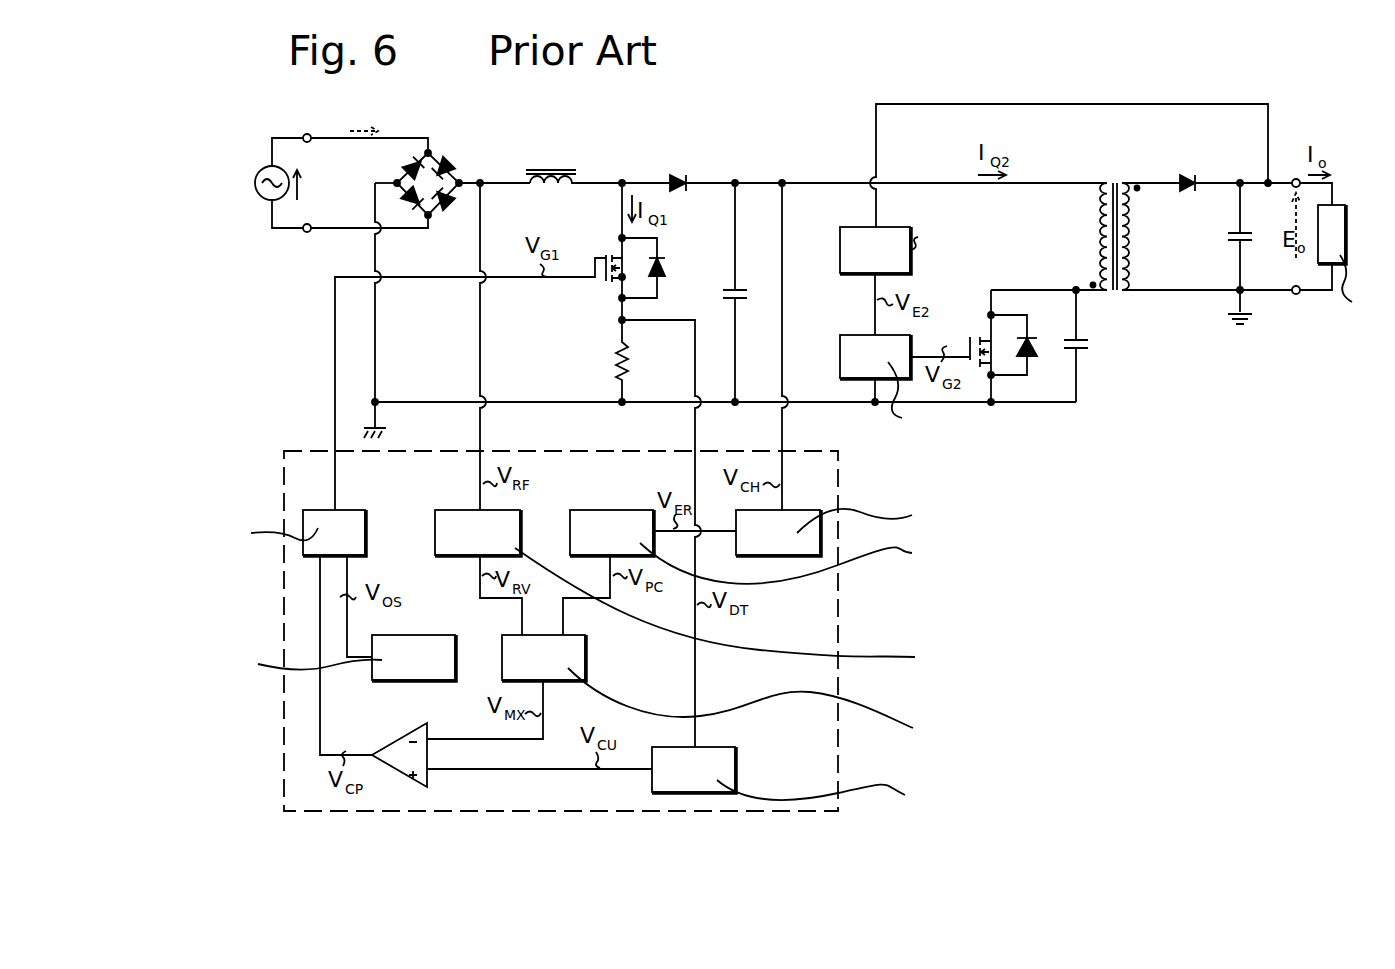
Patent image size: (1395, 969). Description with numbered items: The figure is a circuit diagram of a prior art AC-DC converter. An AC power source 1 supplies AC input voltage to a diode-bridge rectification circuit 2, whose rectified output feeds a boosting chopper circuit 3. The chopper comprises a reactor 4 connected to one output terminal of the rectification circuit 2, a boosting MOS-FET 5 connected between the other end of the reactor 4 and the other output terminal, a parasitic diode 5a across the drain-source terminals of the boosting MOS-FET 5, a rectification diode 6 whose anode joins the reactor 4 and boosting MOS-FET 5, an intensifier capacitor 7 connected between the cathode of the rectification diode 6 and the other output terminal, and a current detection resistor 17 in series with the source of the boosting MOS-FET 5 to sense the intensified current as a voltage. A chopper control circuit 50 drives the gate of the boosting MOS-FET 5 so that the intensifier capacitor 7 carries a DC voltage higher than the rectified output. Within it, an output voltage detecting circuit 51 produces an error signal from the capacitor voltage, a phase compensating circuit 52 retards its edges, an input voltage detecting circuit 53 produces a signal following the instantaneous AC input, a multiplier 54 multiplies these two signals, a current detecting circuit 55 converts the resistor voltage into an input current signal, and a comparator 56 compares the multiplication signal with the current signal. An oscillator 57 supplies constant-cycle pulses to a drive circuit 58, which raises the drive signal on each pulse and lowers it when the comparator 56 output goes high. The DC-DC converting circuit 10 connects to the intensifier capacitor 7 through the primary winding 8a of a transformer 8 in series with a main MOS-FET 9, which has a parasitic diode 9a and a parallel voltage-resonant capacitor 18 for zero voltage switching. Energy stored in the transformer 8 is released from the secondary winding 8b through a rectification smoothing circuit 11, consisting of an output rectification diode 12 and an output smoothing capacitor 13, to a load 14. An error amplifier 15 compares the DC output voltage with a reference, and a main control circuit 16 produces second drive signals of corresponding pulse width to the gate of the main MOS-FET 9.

The AC power source 1 is at (263, 168).
The rectification circuit 2 is at (452, 168).
The boosting chopper circuit 3 is at (627, 166).
The reactor 4 is at (550, 168).
The boosting MOS-FET 5 is at (606, 252).
The parasitic diode 5a is at (665, 264).
The rectification diode 6 is at (680, 175).
The intensifier capacitor 7 is at (742, 296).
The transformer 8 is at (1142, 199).
The primary winding 8a is at (1093, 266).
The secondary winding 8b is at (1136, 237).
The main MOS-FET 9 is at (975, 333).
The parasitic diode 9a is at (1030, 340).
The DC-DC converting circuit 10 is at (845, 139).
The rectification smoothing circuit 11 is at (1231, 167).
The output rectification diode 12 is at (1190, 178).
The output smoothing capacitor 13 is at (1235, 240).
The load 14 is at (1338, 205).
The error amplifier 15 is at (840, 248).
The main control circuit 16 is at (840, 355).
The current detection resistor 17 is at (632, 358).
The voltage-resonant capacitor 18 is at (1070, 352).
The chopper control circuit 50 is at (846, 610).
The output voltage detecting circuit 51 is at (800, 508).
The phase compensating circuit 52 is at (611, 508).
The input voltage detecting circuit 53 is at (450, 508).
The multiplier 54 is at (588, 660).
The current detecting circuit 55 is at (738, 768).
The comparator 56 is at (400, 742).
The oscillator 57 is at (428, 633).
The drive circuit 58 is at (350, 508).